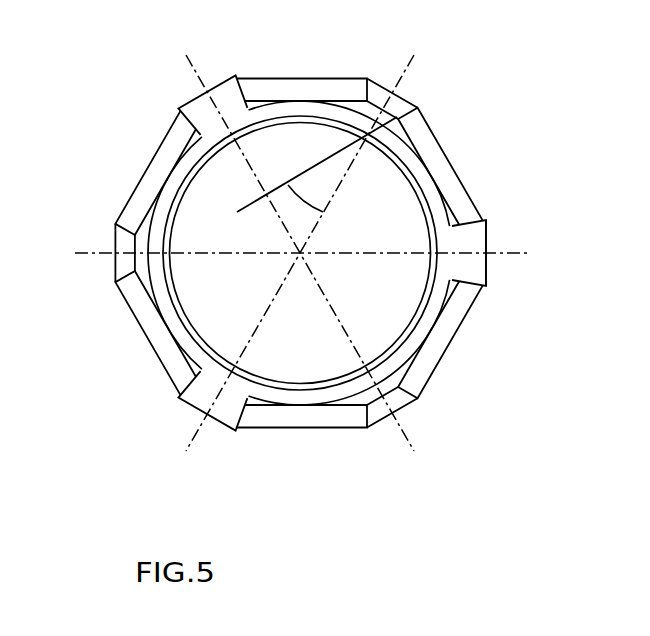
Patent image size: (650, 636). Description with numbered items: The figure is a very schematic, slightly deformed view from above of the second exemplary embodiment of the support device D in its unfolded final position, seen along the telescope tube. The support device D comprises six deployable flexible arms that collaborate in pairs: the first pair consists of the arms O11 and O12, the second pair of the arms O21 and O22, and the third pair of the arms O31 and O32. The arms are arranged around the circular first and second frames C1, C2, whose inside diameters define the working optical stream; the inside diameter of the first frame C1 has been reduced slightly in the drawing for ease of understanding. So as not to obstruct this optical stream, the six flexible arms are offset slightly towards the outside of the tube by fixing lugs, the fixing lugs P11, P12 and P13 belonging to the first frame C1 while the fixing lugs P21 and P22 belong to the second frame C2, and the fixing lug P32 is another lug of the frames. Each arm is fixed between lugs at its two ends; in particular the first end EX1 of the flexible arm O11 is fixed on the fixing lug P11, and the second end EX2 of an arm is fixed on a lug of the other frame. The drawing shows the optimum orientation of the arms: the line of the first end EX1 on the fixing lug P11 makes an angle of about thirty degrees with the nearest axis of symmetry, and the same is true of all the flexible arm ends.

The deployable flexible arm O11 is at (477, 200).
The deployable flexible arm O12 is at (433, 373).
The deployable flexible arm O21 is at (289, 429).
The deployable flexible arm O22 is at (138, 322).
The deployable flexible arm O31 is at (140, 175).
The deployable flexible arm O32 is at (262, 79).
The fixing lug P11 is at (384, 90).
The fixing lug P12 is at (404, 408).
The fixing lug P13 is at (113, 275).
The fixing lug P21 is at (489, 268).
The fixing lug P22 is at (187, 405).
The fixing lug P32 is at (197, 96).
The first frame C1 is at (193, 185).
The second frame C2 is at (322, 102).
The first end EX1 is at (425, 108).
The second end EX2 is at (492, 220).
The support device D is at (509, 116).